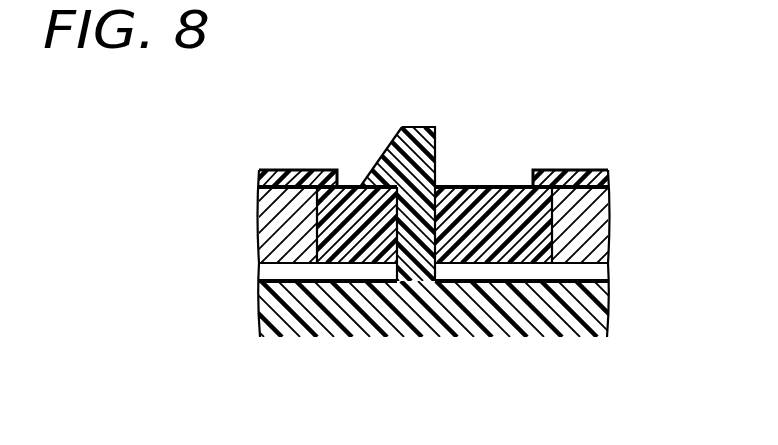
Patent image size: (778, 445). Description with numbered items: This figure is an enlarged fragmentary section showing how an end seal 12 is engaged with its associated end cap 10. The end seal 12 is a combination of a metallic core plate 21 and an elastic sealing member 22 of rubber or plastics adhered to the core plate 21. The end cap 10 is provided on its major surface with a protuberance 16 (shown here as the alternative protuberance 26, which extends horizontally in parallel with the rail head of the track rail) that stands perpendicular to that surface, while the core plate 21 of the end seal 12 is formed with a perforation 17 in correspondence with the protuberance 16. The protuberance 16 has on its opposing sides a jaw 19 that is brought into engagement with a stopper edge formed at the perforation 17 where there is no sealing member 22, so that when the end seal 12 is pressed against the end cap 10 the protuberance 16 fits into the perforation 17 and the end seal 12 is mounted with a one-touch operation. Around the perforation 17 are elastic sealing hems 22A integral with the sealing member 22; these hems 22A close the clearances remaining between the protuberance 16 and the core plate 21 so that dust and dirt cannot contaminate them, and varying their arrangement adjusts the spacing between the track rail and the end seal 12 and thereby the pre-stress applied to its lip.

The end cap 10 is at (397, 305).
The end seal 12 is at (573, 173).
The protuberance 16 is at (394, 182).
The protuberance 26 is at (394, 204).
The perforation 17 is at (333, 240).
The jaw 19 is at (372, 185).
The core plate 21 is at (280, 238).
The elastic sealing member 22 is at (278, 178).
The elastic sealing hem 22A is at (359, 237).